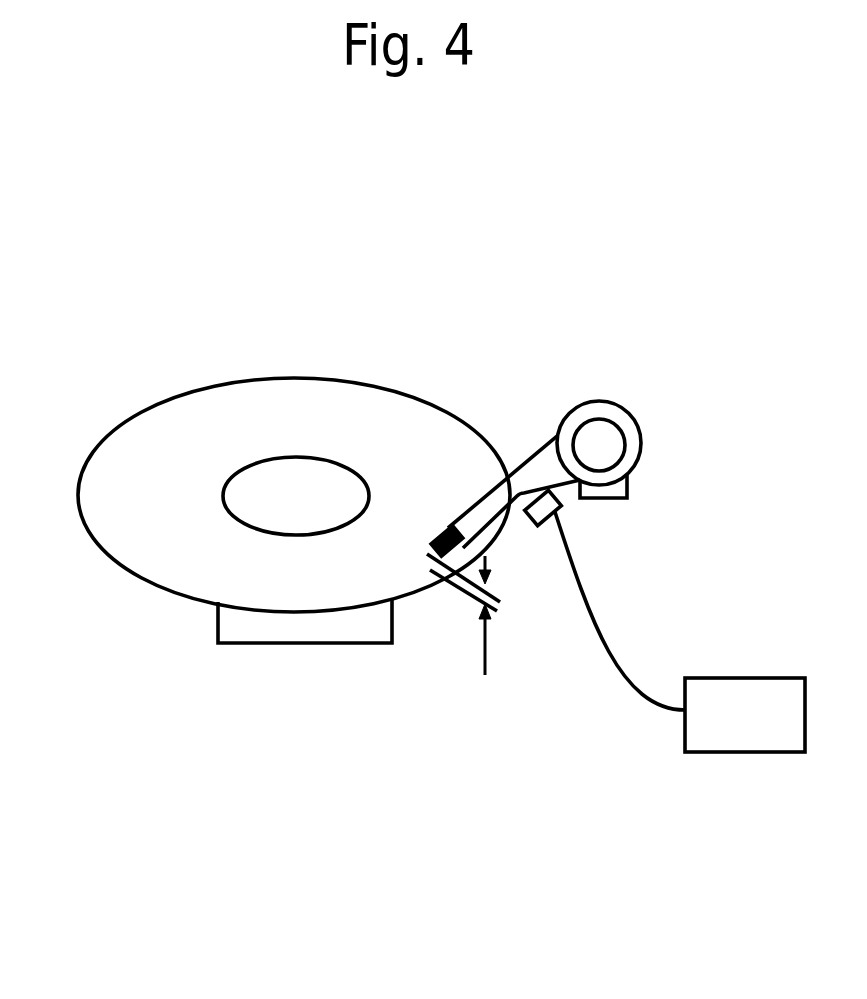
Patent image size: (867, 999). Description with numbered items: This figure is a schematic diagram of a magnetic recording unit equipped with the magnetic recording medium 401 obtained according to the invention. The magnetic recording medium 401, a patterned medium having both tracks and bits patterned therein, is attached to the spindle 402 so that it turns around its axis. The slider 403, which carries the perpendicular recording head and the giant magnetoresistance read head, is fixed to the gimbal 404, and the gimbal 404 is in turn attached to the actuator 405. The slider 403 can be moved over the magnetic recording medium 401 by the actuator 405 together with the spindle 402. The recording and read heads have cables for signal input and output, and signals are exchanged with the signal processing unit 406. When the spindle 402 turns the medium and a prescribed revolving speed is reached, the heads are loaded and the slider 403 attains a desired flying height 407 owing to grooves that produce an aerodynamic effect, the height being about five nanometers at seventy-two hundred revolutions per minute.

The magnetic recording medium 401 is at (108, 499).
The spindle 402 is at (277, 502).
The slider 403 is at (440, 534).
The gimbal 404 is at (533, 463).
The actuator 405 is at (610, 445).
The signal processing unit 406 is at (758, 740).
The flying height 407 is at (473, 633).